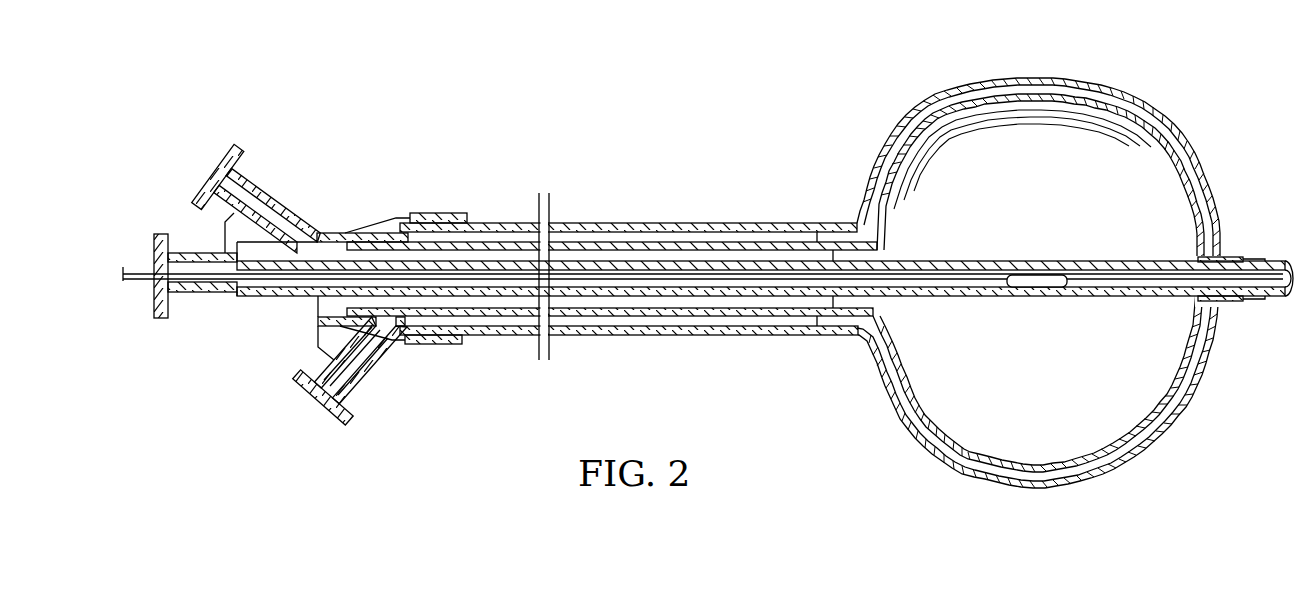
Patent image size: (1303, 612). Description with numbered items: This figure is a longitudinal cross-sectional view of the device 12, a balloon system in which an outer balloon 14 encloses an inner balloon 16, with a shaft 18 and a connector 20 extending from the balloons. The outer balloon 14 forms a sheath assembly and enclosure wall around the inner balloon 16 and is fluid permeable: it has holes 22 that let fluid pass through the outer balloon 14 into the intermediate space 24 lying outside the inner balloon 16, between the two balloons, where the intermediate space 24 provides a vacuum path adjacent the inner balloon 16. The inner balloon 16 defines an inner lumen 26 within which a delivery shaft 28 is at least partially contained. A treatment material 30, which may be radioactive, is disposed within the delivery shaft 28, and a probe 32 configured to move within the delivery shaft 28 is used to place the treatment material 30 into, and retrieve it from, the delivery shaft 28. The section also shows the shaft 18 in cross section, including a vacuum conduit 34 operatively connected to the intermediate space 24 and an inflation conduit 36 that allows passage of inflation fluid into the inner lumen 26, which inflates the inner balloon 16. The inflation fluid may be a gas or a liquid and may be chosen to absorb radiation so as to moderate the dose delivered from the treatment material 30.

The device 12 is at (524, 142).
The outer balloon 14 is at (1143, 450).
The inner balloon 16 is at (1192, 360).
The shaft 18 is at (620, 224).
The connector 20 is at (345, 230).
The holes 22 is at (907, 135).
The intermediate space 24 is at (1107, 105).
The inner lumen 26 is at (1041, 380).
The delivery shaft 28 is at (153, 283).
The treatment material 30 is at (1035, 279).
The probe 32 is at (953, 288).
The vacuum conduit 34 is at (317, 398).
The inflation conduit 36 is at (228, 172).